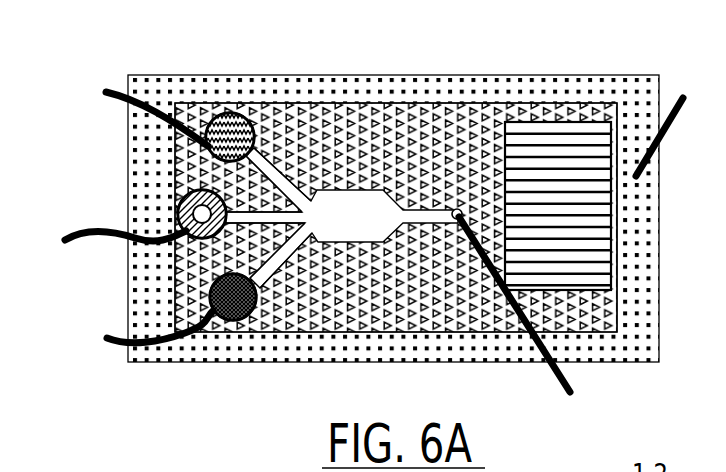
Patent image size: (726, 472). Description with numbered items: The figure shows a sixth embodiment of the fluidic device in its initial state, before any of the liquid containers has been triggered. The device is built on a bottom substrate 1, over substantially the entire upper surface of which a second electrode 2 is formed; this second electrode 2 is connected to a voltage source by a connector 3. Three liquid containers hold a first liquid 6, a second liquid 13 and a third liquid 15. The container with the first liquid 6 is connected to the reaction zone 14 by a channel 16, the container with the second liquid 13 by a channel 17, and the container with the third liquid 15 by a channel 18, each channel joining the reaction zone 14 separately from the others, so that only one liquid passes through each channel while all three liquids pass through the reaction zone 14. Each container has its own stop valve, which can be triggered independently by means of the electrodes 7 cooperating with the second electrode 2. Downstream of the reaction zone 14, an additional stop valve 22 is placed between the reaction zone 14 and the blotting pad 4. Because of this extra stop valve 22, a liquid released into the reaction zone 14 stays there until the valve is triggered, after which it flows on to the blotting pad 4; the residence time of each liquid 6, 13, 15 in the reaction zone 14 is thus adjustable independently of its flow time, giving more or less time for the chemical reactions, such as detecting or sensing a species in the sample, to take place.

The bottom substrate 1 is at (398, 186).
The second electrode 2 is at (625, 90).
The connector 3 is at (667, 121).
The blotting pad 4 is at (570, 132).
The first liquid 6 is at (224, 116).
The electrodes 7 is at (320, 247).
The second liquid 13 is at (182, 201).
The reaction zone 14 is at (358, 233).
The third liquid 15 is at (213, 290).
The channel 16 is at (277, 180).
The channel 17 is at (247, 217).
The channel 18 is at (257, 271).
The stop valve 22 is at (457, 209).